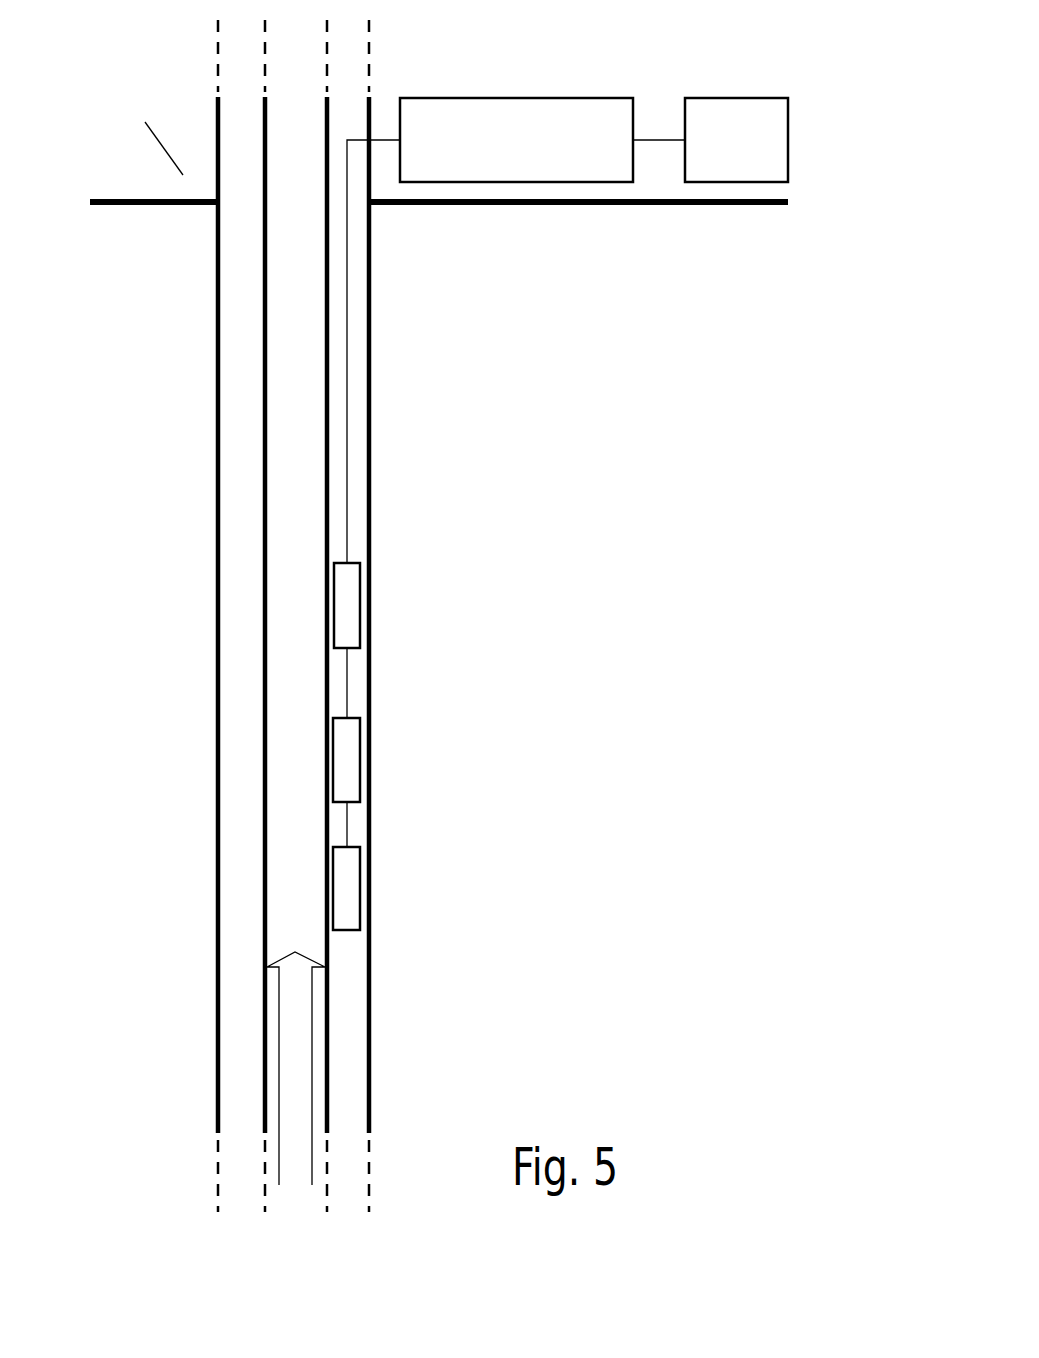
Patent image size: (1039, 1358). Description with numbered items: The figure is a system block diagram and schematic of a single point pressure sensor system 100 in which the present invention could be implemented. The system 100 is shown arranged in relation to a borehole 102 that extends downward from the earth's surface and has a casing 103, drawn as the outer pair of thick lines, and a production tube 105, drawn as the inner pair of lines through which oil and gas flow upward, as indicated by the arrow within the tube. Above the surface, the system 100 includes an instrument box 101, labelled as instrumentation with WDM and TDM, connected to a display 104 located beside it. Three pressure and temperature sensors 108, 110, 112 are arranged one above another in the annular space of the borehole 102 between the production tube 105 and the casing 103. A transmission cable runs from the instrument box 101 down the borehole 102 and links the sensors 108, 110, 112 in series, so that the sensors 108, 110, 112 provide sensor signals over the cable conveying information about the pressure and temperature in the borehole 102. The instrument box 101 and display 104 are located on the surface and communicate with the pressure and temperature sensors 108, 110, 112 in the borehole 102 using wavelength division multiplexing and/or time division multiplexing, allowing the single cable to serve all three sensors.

The single point pressure sensor system 100 is at (146, 60).
The instrument box 101 is at (528, 95).
The borehole 102 is at (199, 469).
The casing 103 is at (215, 835).
The display 104 is at (733, 95).
The production tube 105 is at (293, 937).
The pressure and temperature sensor 108 is at (362, 605).
The pressure and temperature sensor 110 is at (360, 760).
The pressure and temperature sensor 112 is at (360, 890).